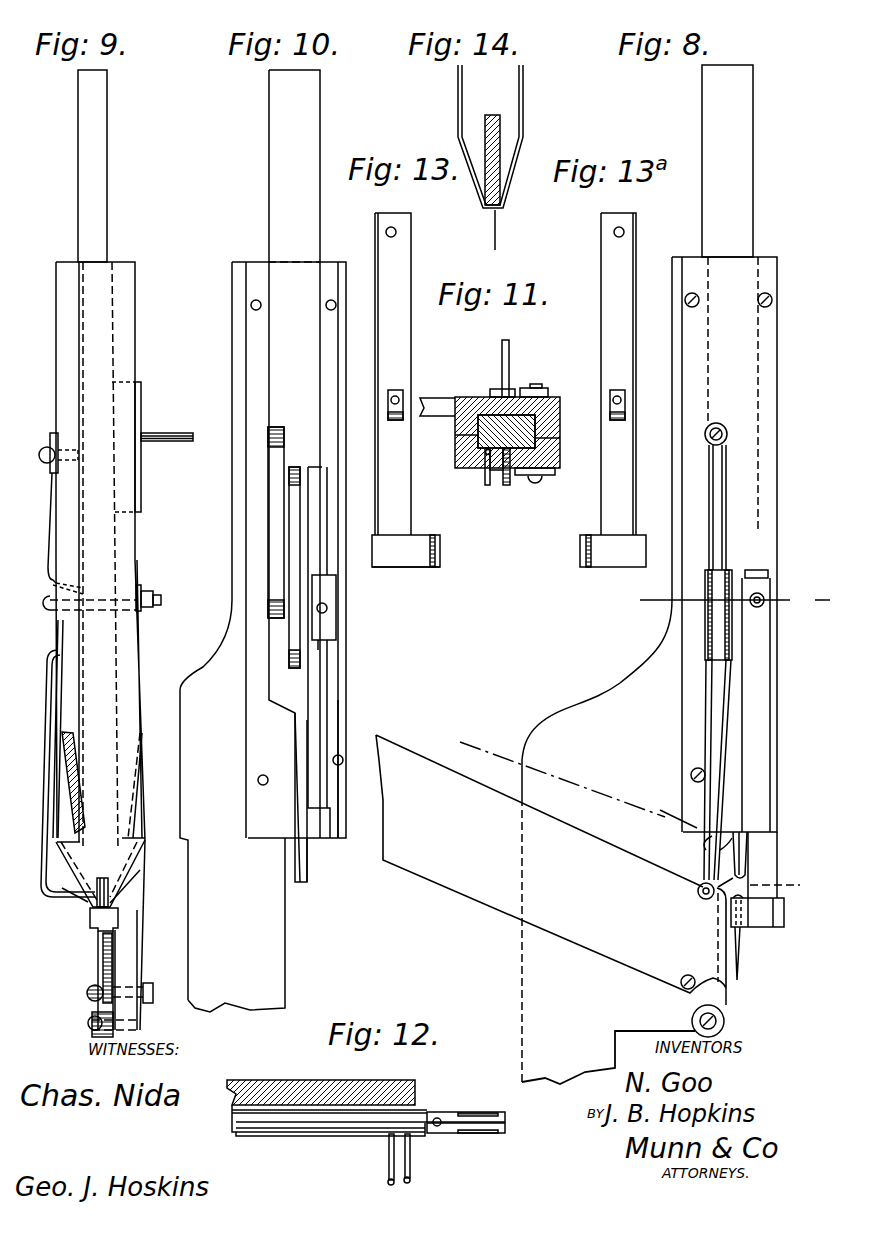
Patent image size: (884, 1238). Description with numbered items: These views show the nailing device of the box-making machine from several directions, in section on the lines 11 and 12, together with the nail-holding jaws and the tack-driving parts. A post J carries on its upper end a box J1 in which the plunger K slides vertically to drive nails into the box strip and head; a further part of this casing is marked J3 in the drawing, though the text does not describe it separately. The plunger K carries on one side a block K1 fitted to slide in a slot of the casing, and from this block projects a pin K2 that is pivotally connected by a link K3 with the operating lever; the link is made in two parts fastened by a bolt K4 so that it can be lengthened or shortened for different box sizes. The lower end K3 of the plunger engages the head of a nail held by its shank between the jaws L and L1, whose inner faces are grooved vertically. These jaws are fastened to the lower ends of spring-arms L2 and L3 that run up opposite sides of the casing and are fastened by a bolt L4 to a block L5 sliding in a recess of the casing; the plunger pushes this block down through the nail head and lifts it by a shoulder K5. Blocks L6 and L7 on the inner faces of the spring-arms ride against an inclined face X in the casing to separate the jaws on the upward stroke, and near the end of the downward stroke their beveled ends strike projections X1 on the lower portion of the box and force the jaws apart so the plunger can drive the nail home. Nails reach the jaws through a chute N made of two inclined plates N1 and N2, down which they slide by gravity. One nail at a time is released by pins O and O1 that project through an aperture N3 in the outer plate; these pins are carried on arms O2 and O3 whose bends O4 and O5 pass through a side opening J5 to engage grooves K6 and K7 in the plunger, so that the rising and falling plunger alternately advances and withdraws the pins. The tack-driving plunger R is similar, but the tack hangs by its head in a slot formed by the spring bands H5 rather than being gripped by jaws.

In FIG. 9, the plunger K is at (107, 210).
In FIG. 10, the plunger K is at (268, 177).
In FIG. 11, the plunger K is at (490, 418).
In FIG. 8, the plunger K is at (753, 228).
In FIG. 10, the post J is at (236, 925).
In FIG. 11, the post J is at (437, 407).
In FIG. 8, the post J is at (607, 697).
In FIG. 12, the post J is at (357, 1081).
In FIG. 9, the box J1 is at (138, 345).
In FIG. 10, the box J1 is at (237, 545).
In FIG. 11, the box J1 is at (562, 410).
In FIG. 8, the box J1 is at (777, 450).
In FIG. 10, the bracket J3 is at (333, 703).
In FIG. 8, the bracket J3 is at (752, 688).
In FIG. 8, the side opening J5 is at (708, 655).
In FIG. 9, the block K1 is at (143, 505).
In FIG. 11, the block K1 is at (512, 390).
In FIG. 9, the pin K2 is at (168, 433).
In FIG. 11, the pin K2 is at (509, 345).
In FIG. 9, the link K3 is at (118, 853).
In FIG. 10, the link K3 is at (310, 876).
In FIG. 10, the bolt K4 is at (320, 472).
In FIG. 10, the shoulder K5 is at (320, 648).
In FIG. 10, the groove K6 is at (275, 486).
In FIG. 11, the groove K6 is at (455, 437).
In FIG. 10, the groove K7 is at (298, 538).
In FIG. 11, the groove K7 is at (560, 440).
In FIG. 9, the jaw L is at (87, 934).
In FIG. 13, the jaw L is at (418, 568).
In FIG. 8, the jaw L is at (742, 937).
In FIG. 12, the jaw L is at (442, 1134).
In FIG. 9, the jaw L1 is at (137, 747).
In FIG. 13, the spring-arm L2 is at (411, 522).
In FIG. 13A, the spring-arm L2 is at (601, 525).
In FIG. 11, the spring-arm L2 is at (530, 478).
In FIG. 8, the spring-arm L2 is at (778, 864).
In FIG. 12, the spring-arm L2 is at (478, 1134).
In FIG. 9, the spring-arm L3 is at (140, 862).
In FIG. 11, the spring-arm L3 is at (542, 388).
In FIG. 8, the spring-arm L3 is at (745, 852).
In FIG. 12, the spring-arm L3 is at (475, 1110).
In FIG. 9, the bolt L4 is at (160, 605).
In FIG. 10, the bolt L4 is at (327, 606).
In FIG. 13, the bolt L4 is at (386, 570).
In FIG. 11, the bolt L4 is at (542, 480).
In FIG. 8, the bolt L4 is at (760, 598).
In FIG. 9, the block L5 is at (88, 845).
In FIG. 10, the block L5 is at (335, 630).
In FIG. 8, the block L5 is at (768, 573).
In FIG. 9, the block L6 is at (58, 757).
In FIG. 13, the block L6 is at (388, 400).
In FIG. 13A, the block L7 is at (625, 410).
In FIG. 12, the block L7 is at (432, 1110).
In FIG. 9, the chute N is at (102, 968).
In FIG. 8, the chute N is at (486, 788).
In FIG. 12, the chute N is at (284, 1118).
In FIG. 9, the plate N1 is at (83, 903).
In FIG. 8, the plate N1 is at (586, 833).
In FIG. 12, the plate N1 is at (345, 1136).
In FIG. 9, the plate N2 is at (107, 883).
In FIG. 8, the aperture N3 is at (703, 903).
In FIG. 8, the pin O is at (698, 889).
In FIG. 12, the pin O is at (388, 1166).
In FIG. 9, the pin O1 is at (55, 906).
In FIG. 8, the pin O1 is at (714, 905).
In FIG. 12, the pin O1 is at (410, 1166).
In FIG. 9, the arm O2 is at (46, 885).
In FIG. 11, the arm O2 is at (487, 478).
In FIG. 8, the arm O2 is at (716, 709).
In FIG. 12, the arm O2 is at (388, 1183).
In FIG. 9, the arm O3 is at (45, 870).
In FIG. 11, the arm O3 is at (506, 486).
In FIG. 8, the arm O3 is at (730, 727).
In FIG. 12, the arm O3 is at (410, 1182).
In FIG. 11, the bend O4 is at (484, 455).
In FIG. 8, the bend O4 is at (711, 630).
In FIG. 9, the bend O5 is at (80, 600).
In FIG. 11, the bend O5 is at (498, 470).
In FIG. 8, the bend O5 is at (733, 640).
In FIG. 9, the inclined face X is at (70, 800).
In FIG. 9, the projection X1 is at (147, 833).
In FIG. 14, the plunger R is at (495, 115).
In FIG. 14, the spring jaws or bands H5 is at (470, 186).
In FIG. 8, the section line 11 is at (721, 600).
In FIG. 8, the section line 12 is at (630, 811).